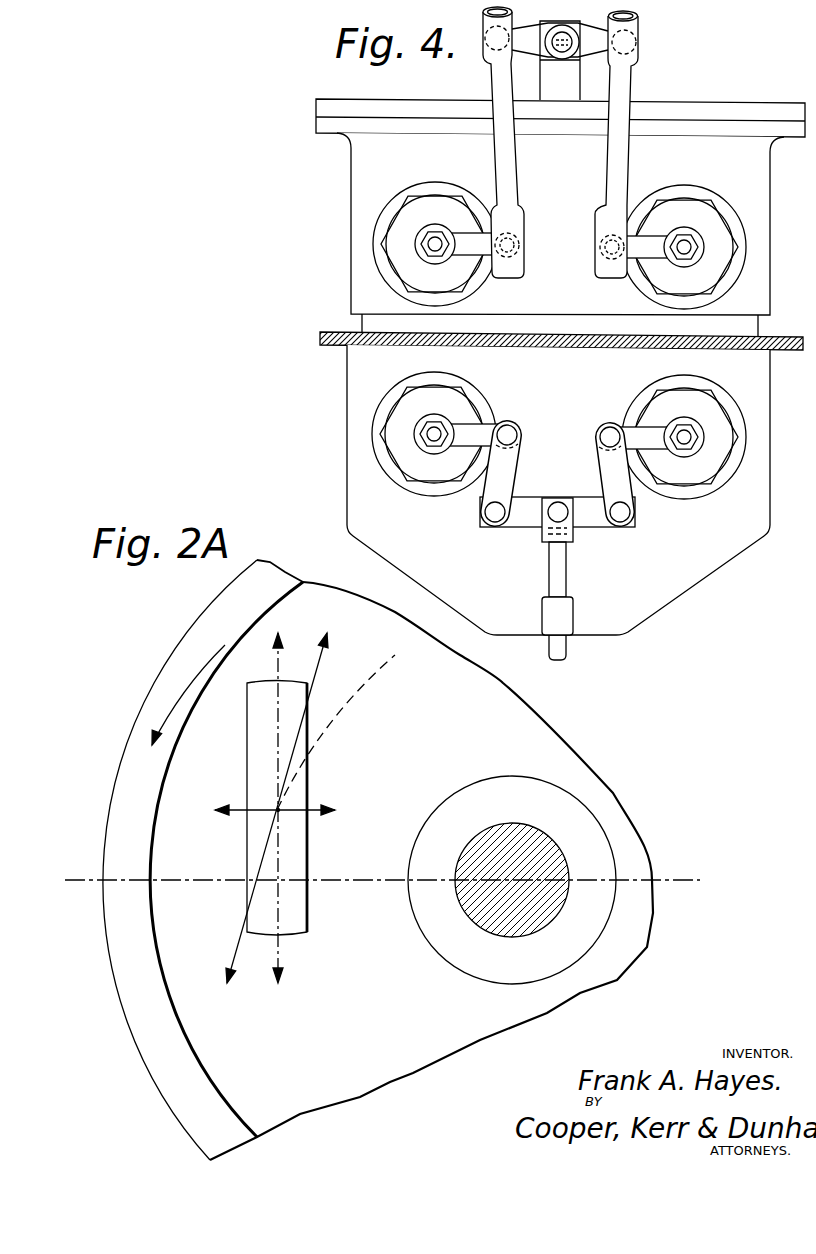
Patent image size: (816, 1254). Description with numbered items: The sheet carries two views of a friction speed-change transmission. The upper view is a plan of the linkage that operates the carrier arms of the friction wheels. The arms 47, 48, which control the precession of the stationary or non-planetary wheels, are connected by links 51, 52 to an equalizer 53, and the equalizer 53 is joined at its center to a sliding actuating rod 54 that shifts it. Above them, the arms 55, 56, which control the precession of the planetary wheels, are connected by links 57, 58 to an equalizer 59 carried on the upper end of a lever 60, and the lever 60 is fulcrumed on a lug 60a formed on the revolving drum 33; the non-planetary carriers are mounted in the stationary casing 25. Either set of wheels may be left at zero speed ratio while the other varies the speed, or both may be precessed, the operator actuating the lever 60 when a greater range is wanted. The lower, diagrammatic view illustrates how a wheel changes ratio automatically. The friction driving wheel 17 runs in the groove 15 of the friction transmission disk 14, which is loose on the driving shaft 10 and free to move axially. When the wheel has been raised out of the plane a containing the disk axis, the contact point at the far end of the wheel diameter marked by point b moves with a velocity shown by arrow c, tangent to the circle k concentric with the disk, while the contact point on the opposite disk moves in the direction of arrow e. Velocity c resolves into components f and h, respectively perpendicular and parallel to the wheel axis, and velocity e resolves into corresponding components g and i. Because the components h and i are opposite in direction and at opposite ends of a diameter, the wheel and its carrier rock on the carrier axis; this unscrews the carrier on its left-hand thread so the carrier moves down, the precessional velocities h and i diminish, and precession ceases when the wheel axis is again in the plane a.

In FIG. 2A, the driving shaft 10 is at (490, 838).
In FIG. 2A, the friction transmission disk 14 is at (126, 770).
In FIG. 2A, the groove 15 is at (393, 1070).
In FIG. 2A, the friction driving wheel 17 is at (265, 742).
In FIG. 4, the casing 25 is at (355, 432).
In FIG. 4, the revolving drum 33 is at (356, 190).
In FIG. 4, the arm 47 is at (470, 428).
In FIG. 4, the arm 48 is at (648, 430).
In FIG. 4, the link 51 is at (500, 470).
In FIG. 4, the link 52 is at (605, 462).
In FIG. 4, the equalizer 53 is at (528, 525).
In FIG. 4, the sliding actuating rod 54 is at (566, 572).
In FIG. 4, the arm 55 is at (647, 250).
In FIG. 4, the arm 56 is at (465, 242).
In FIG. 4, the link 57 is at (620, 172).
In FIG. 4, the link 58 is at (510, 180).
In FIG. 4, the equalizer 59 is at (523, 42).
In FIG. 4, the lever 60 is at (562, 56).
In FIG. 4, the lug 60a is at (550, 92).
In FIG. 2A, the plane a is at (382, 862).
In FIG. 2A, the point b is at (280, 812).
In FIG. 2A, the arrow c is at (235, 956).
In FIG. 2A, the arrow e is at (331, 660).
In FIG. 2A, the component f is at (282, 948).
In FIG. 2A, the component g is at (280, 658).
In FIG. 2A, the component h is at (218, 806).
In FIG. 2A, the component i is at (316, 806).
In FIG. 2A, the circle k is at (336, 732).